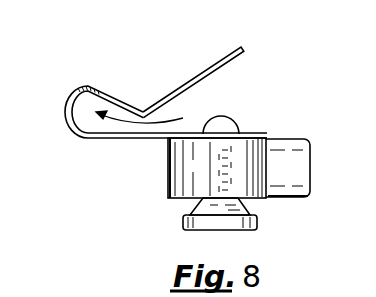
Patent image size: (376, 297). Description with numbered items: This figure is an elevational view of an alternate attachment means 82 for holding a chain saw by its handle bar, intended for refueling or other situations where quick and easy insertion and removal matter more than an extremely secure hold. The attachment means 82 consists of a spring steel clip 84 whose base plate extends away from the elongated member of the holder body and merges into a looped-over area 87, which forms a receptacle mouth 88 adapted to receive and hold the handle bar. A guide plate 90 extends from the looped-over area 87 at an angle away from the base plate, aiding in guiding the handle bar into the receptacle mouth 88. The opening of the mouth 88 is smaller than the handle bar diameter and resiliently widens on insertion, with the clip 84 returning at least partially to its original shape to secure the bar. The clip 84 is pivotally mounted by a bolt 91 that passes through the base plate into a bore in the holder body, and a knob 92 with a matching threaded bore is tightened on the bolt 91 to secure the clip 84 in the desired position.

The alternate attachment means 82 is at (172, 69).
The spring steel clip 84 is at (77, 85).
The looped-over area 87 is at (66, 123).
The receptacle mouth 88 is at (152, 110).
The guide plate 90 is at (191, 79).
The bolt 91 is at (221, 125).
The knob 92 is at (258, 217).